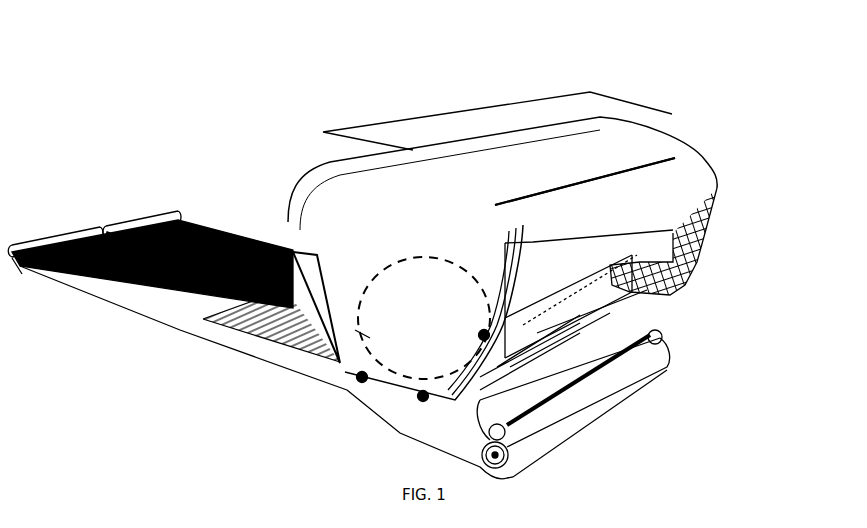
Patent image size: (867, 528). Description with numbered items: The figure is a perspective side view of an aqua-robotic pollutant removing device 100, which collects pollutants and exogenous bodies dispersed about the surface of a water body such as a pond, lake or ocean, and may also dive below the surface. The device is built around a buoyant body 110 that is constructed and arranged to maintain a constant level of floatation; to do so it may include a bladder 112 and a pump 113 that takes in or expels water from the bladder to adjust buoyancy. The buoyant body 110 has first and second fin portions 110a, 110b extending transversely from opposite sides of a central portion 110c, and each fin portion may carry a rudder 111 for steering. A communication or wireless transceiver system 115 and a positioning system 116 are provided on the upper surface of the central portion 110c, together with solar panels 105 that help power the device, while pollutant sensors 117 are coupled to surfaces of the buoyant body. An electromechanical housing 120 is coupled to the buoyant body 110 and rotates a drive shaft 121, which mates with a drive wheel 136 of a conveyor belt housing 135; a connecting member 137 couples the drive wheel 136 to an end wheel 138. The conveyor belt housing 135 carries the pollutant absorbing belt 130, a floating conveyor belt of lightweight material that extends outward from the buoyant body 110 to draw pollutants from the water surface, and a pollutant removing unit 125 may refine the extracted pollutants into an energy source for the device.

The aqua-robotic pollutant removing device 100 is at (713, 58).
The solar panels 105 is at (507, 126).
The buoyant body 110 is at (478, 284).
The first fin portion 110a is at (254, 332).
The second fin portion 110b is at (703, 234).
The central portion 110c is at (395, 168).
The rudder 111 is at (298, 272).
The bladder 112 is at (362, 335).
The pump 113 is at (481, 341).
The communication or wireless transceiver system 115 is at (627, 171).
The positioning system 116 is at (585, 181).
The pollutant sensors 117 is at (357, 383).
The electromechanical housing 120 is at (565, 359).
The drive shaft 121 is at (508, 426).
The pollutant removing unit 125 is at (602, 302).
The pollutant absorbing belt 130 is at (177, 253).
The conveyor belt housing 135 is at (200, 262).
The drive wheel 136 is at (508, 455).
The connecting member 137 is at (120, 257).
The end wheel 138 is at (23, 264).